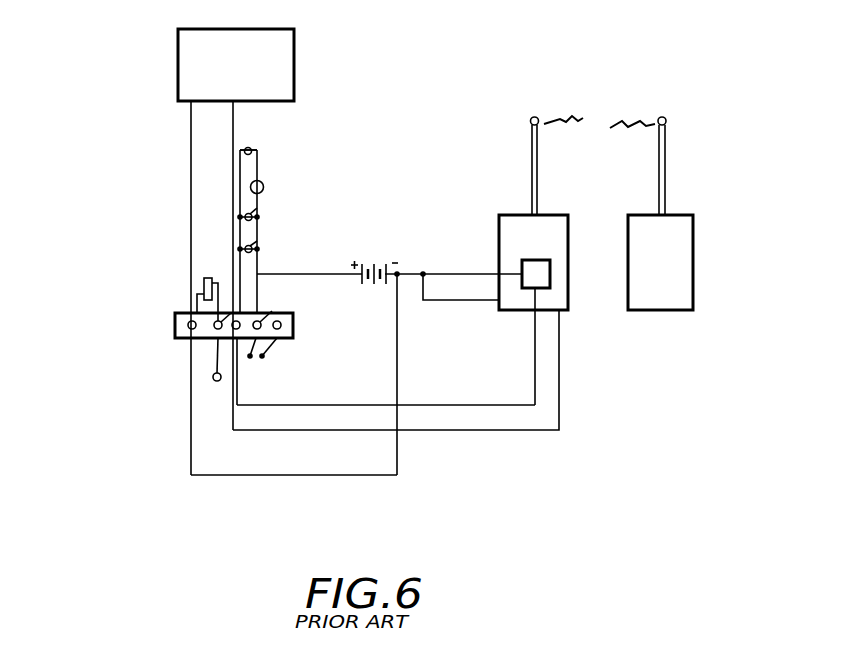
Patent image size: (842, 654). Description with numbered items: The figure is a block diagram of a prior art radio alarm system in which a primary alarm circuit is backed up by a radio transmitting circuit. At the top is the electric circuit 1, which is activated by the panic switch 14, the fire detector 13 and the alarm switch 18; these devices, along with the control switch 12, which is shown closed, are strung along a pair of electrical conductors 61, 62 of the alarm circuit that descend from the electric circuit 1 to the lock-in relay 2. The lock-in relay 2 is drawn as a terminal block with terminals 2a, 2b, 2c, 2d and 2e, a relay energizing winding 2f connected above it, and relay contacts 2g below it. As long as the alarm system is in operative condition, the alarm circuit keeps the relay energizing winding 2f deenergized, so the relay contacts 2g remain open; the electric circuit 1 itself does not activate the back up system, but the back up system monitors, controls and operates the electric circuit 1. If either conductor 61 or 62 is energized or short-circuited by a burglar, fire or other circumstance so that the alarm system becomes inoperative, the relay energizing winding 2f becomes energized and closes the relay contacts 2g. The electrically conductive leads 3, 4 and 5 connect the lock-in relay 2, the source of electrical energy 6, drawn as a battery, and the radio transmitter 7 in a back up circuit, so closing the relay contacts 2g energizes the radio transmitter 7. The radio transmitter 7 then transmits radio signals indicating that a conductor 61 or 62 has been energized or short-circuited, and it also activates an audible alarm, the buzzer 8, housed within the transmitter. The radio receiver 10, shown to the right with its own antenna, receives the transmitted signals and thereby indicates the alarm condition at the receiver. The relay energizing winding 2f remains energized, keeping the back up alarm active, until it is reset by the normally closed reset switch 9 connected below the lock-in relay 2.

The electric circuit 1 is at (294, 52).
The alarm switch 18 is at (248, 147).
The electrical conductor 61 is at (240, 168).
The electrical conductor 62 is at (252, 152).
The control switch 12 is at (264, 185).
The fire detector 13 is at (257, 208).
The panic switch 14 is at (257, 241).
The relay energizing winding 2f is at (205, 283).
The relay terminal 2c is at (234, 321).
The lock-in relay 2 is at (175, 323).
The relay terminal 2a is at (188, 339).
The relay terminal 2b is at (214, 337).
The relay terminal 2d is at (272, 311).
The relay terminal 2e is at (293, 325).
The reset switch 9 is at (213, 380).
The relay contacts 2g is at (262, 359).
The electrically conductive lead 3 is at (320, 277).
The source of electrical energy 6 is at (372, 290).
The electrically conductive lead 4 is at (423, 301).
The radio transmitter 7 is at (552, 223).
The buzzer 8 is at (525, 290).
The radio receiver 10 is at (687, 226).
The electrically conductive lead 5 is at (559, 402).